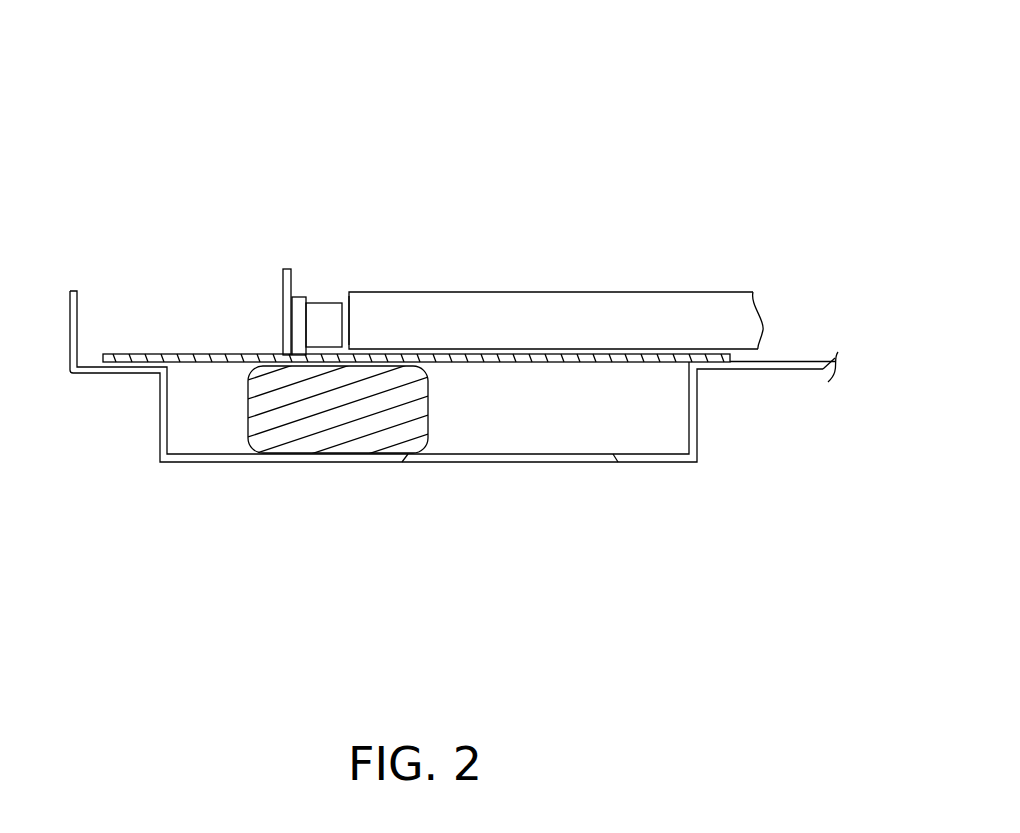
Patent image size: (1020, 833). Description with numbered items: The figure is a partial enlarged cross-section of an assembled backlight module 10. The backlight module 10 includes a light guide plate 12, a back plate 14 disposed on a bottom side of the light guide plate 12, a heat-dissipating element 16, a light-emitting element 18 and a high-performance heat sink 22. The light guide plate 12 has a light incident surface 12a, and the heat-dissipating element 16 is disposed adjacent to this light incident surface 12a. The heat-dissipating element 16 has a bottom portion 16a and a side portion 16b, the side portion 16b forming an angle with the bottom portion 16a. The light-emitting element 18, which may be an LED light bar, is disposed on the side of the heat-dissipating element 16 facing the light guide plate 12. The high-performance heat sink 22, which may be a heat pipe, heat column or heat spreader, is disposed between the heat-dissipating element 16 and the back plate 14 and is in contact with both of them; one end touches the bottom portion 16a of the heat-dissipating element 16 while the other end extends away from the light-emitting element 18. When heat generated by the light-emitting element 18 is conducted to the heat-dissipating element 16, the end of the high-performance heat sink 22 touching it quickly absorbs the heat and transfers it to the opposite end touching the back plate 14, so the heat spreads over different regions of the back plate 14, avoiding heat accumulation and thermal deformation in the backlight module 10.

The backlight module 10 is at (634, 42).
The light guide plate 12 is at (621, 313).
The light incident surface 12a is at (347, 303).
The back plate 14 is at (547, 454).
The heat-dissipating element 16 is at (416, 247).
The bottom portion 16a is at (477, 360).
The side portion 16b is at (291, 313).
The light-emitting element 18 is at (318, 310).
The high-performance heat sink 22 is at (338, 427).